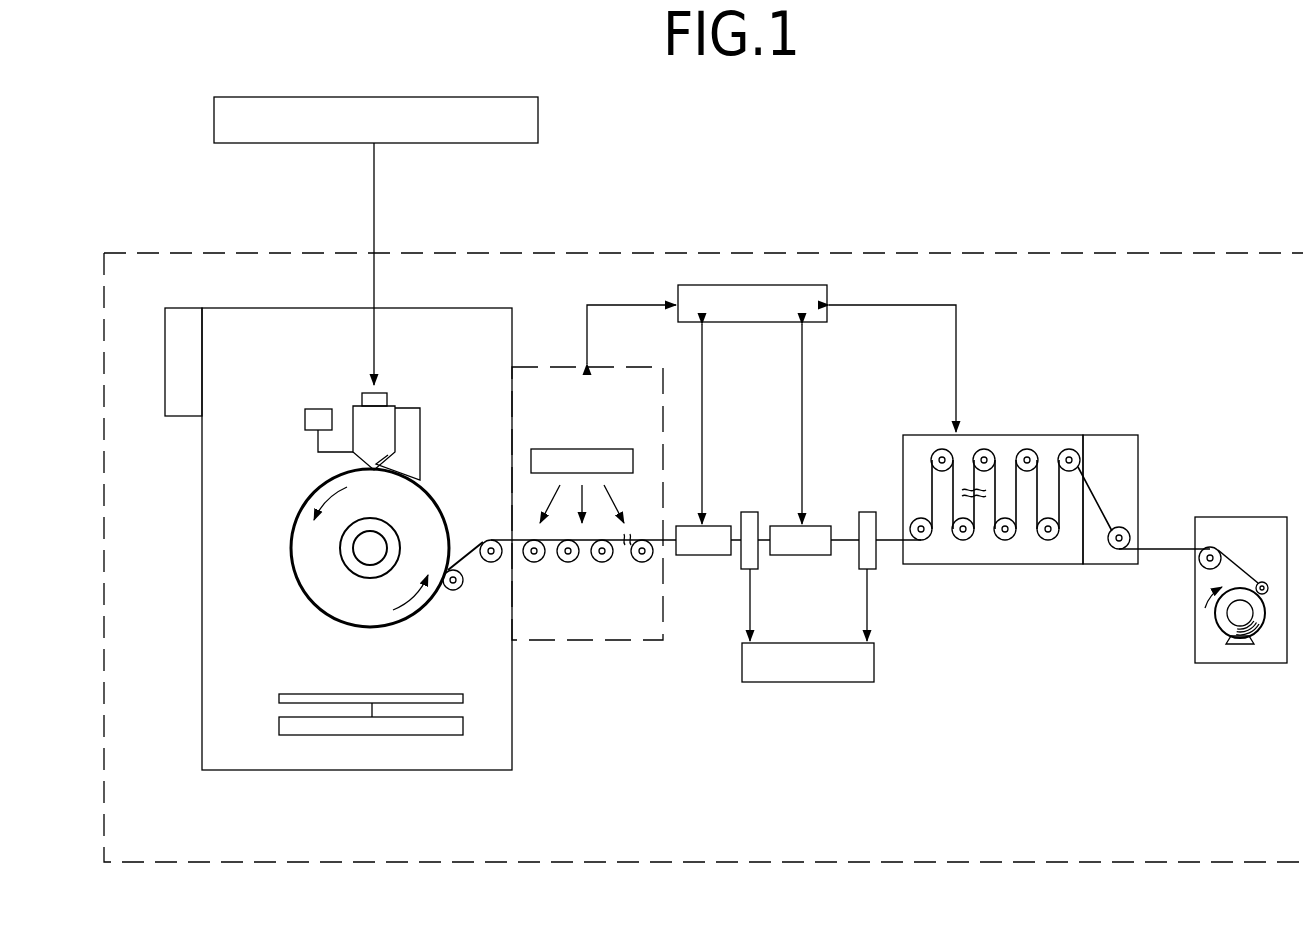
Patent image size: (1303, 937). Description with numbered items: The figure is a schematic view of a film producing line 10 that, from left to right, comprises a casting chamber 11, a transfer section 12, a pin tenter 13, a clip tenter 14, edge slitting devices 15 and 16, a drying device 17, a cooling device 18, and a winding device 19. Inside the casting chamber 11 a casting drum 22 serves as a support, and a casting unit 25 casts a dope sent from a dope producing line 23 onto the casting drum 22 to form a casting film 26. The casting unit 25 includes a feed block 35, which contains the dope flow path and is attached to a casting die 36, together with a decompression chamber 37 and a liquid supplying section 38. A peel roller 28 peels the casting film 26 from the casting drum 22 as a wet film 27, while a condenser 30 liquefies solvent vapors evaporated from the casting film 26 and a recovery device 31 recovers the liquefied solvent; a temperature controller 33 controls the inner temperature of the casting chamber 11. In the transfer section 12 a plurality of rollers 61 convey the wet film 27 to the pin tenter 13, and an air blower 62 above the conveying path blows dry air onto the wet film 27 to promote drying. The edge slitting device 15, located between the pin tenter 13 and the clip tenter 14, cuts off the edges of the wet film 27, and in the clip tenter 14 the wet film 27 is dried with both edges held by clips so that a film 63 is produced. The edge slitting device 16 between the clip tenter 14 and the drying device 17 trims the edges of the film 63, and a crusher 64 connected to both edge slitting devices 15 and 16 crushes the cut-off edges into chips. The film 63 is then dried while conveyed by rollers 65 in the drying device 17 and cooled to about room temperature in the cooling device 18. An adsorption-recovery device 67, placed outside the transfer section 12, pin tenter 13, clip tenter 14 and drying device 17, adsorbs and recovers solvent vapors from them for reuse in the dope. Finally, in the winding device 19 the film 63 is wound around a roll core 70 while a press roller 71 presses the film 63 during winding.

The film producing line 10 is at (746, 250).
The casting chamber 11 is at (348, 772).
The transfer section 12 is at (543, 362).
The pin tenter 13 is at (704, 556).
The clip tenter 14 is at (798, 556).
The edge slitting device 15 is at (750, 511).
The edge slitting device 16 is at (867, 511).
The drying device 17 is at (908, 432).
The cooling device 18 is at (1108, 432).
The winding device 19 is at (1246, 516).
The casting drum 22 is at (303, 540).
The dope producing line 23 is at (540, 121).
The casting unit 25 is at (320, 376).
The casting film 26 is at (296, 585).
The wet film 27 is at (480, 548).
The peel roller 28 is at (451, 592).
The condenser 30 is at (279, 699).
The recovery device 31 is at (463, 726).
The temperature controller 33 is at (186, 418).
The feed block 35 is at (388, 394).
The casting die 36 is at (397, 411).
The decompression chamber 37 is at (420, 434).
The liquid supplying section 38 is at (303, 436).
The rollers 61 is at (496, 563).
The air blower 62 is at (582, 451).
The film 63 is at (845, 544).
The crusher 64 is at (812, 684).
The rollers 65 is at (1075, 455).
The adsorption-recovery device 67 is at (756, 324).
The roll core 70 is at (1245, 646).
The press roller 71 is at (1262, 580).